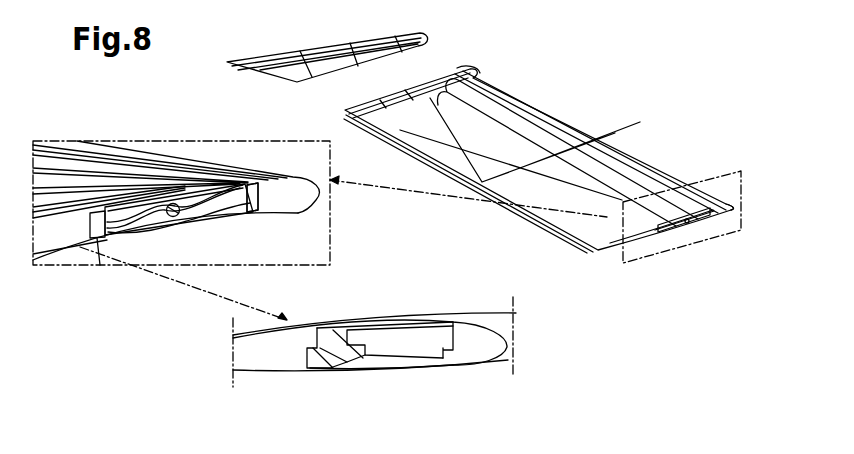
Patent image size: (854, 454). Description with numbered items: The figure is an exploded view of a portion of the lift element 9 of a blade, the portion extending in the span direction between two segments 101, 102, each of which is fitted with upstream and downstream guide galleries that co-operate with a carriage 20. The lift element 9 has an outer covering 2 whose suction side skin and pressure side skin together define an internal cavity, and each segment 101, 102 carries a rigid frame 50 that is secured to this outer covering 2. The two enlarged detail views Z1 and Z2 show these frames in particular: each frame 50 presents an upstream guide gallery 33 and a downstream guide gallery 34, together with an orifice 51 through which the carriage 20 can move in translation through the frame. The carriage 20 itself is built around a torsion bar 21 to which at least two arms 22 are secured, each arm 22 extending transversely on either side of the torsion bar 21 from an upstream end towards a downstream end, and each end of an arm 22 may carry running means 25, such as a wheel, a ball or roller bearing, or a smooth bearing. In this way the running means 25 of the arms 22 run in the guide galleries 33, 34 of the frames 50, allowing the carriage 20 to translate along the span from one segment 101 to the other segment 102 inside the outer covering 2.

The lift element 9 is at (538, 144).
The carriage 20 is at (603, 124).
The torsion bar 21 is at (60, 187).
The arm 22 is at (633, 192).
The outer covering 2 is at (220, 173).
The running means 25 is at (260, 198).
The upstream guide gallery 33 is at (260, 187).
The downstream guide gallery 34 is at (100, 240).
The rigid frame 50 is at (50, 240).
The orifice 51 is at (398, 340).
The segment 101 is at (723, 210).
The segment 102 is at (468, 66).
The detail view Z1 is at (300, 140).
The detail view Z2 is at (530, 340).